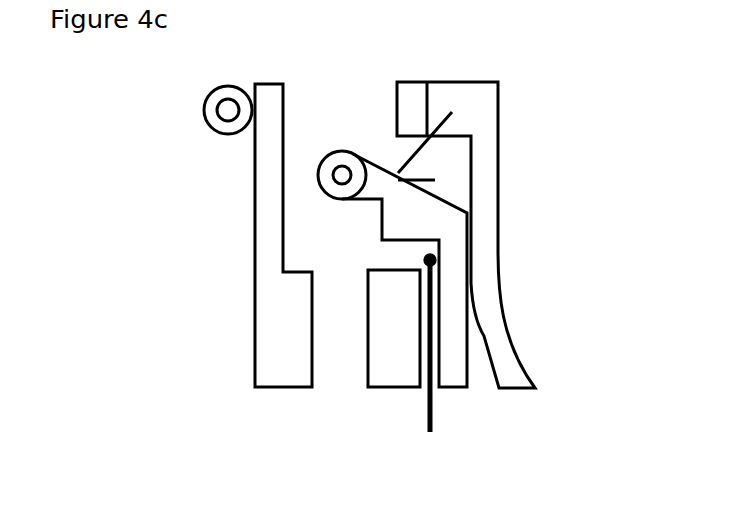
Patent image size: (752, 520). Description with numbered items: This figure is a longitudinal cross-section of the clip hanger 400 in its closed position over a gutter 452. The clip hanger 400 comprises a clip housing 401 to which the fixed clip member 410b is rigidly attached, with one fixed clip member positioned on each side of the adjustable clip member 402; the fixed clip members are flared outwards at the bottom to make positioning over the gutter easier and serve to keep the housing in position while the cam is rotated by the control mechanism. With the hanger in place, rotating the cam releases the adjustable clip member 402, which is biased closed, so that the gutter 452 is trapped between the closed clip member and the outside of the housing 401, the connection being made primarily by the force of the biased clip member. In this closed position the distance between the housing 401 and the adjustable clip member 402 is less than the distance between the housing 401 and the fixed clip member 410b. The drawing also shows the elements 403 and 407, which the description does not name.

The clip hanger 400 is at (111, 247).
The clip housing 401 is at (270, 328).
The adjustable clip member 402 is at (450, 296).
The pivoting latch arm 403 is at (383, 217).
The roller 407 is at (215, 104).
The fixed clip member 410b is at (482, 160).
The gutter 452 is at (433, 418).